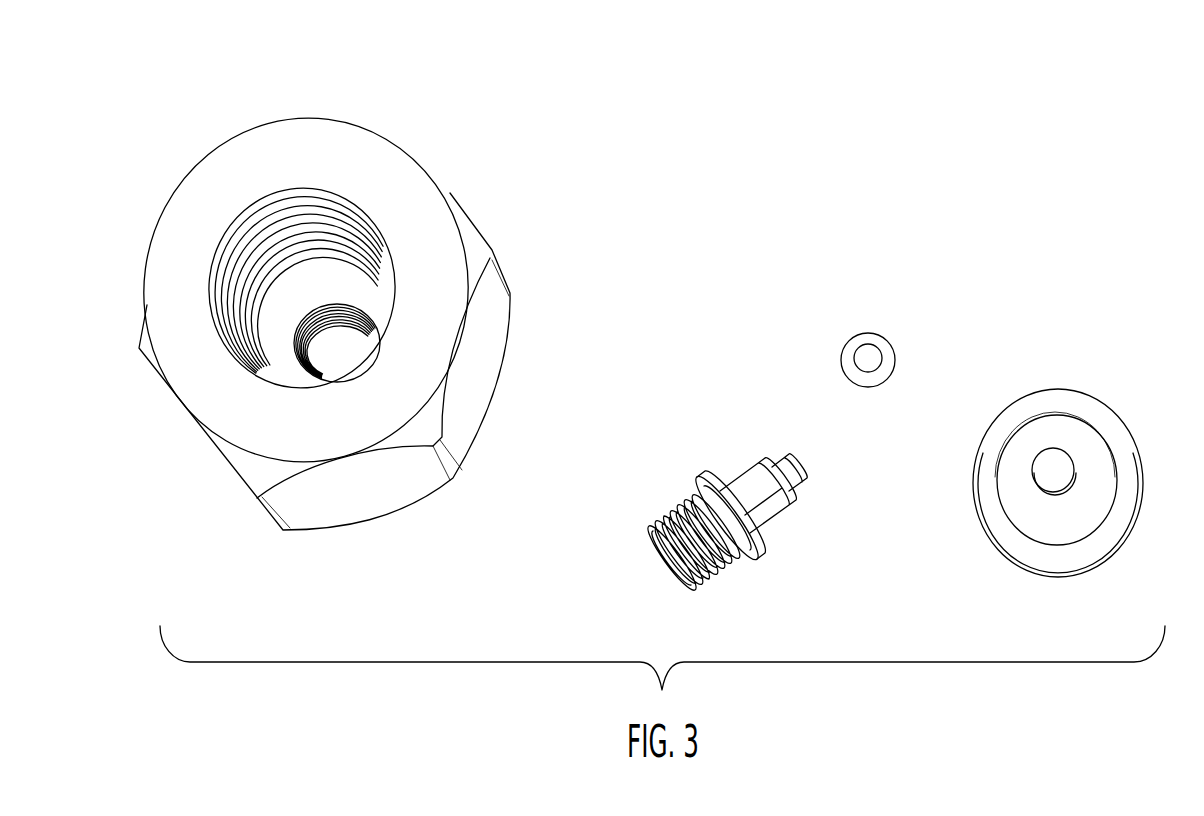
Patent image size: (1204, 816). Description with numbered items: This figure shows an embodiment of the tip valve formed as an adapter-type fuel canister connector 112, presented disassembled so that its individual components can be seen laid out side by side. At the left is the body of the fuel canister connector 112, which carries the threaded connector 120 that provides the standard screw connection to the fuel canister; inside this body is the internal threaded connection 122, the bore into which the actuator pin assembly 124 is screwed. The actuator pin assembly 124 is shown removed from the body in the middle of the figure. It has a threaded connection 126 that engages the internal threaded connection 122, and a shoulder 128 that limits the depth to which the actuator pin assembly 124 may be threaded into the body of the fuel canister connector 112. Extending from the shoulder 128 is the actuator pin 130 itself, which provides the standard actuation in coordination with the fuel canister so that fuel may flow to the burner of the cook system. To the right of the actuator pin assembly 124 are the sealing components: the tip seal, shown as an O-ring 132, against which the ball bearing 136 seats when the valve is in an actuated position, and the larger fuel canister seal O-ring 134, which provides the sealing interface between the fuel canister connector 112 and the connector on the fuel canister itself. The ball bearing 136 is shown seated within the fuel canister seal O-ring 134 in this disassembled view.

The adapter-type fuel canister connector 112 is at (329, 307).
The threaded connector 120 is at (275, 237).
The internal threaded connection 122 is at (357, 322).
The actuator pin assembly 124 is at (713, 523).
The threaded connection 126 is at (724, 567).
The shoulder 128 is at (758, 556).
The actuator pin 130 is at (773, 497).
The tip seal O-ring 132 is at (880, 333).
The fuel canister seal O-ring 134 is at (1086, 467).
The ball bearing 136 is at (1060, 462).